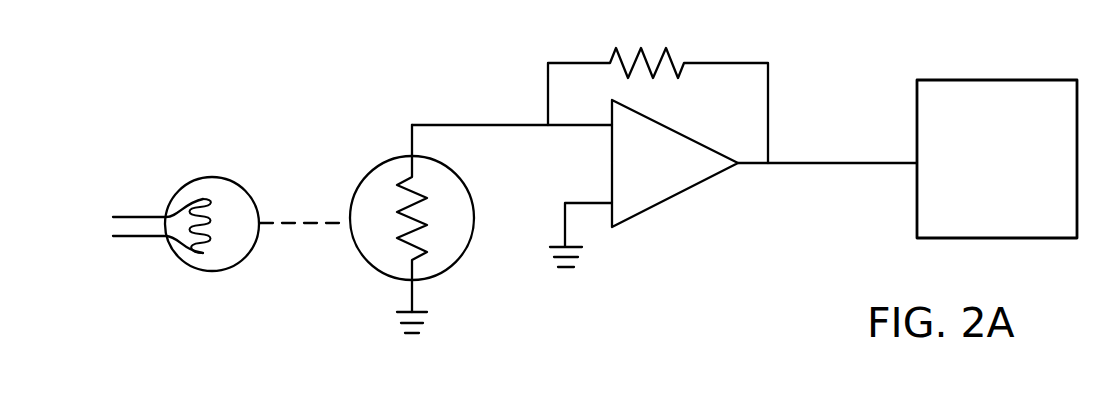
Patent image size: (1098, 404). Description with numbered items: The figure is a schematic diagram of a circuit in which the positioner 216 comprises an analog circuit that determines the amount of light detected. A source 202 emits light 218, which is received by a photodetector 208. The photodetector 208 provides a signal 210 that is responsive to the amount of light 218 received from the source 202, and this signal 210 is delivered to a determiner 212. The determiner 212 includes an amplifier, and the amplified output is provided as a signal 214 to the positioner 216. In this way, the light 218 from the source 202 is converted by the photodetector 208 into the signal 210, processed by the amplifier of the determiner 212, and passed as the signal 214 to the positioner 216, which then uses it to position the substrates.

The source 202 is at (191, 184).
The photodetector 208 is at (366, 177).
The signal 210 is at (492, 124).
The determiner 212 is at (675, 197).
The signal 214 is at (835, 162).
The positioner 216 is at (1010, 79).
The light 218 is at (303, 224).